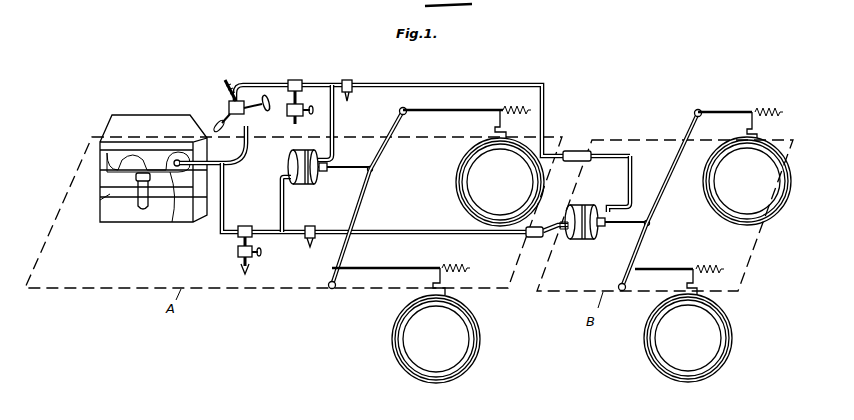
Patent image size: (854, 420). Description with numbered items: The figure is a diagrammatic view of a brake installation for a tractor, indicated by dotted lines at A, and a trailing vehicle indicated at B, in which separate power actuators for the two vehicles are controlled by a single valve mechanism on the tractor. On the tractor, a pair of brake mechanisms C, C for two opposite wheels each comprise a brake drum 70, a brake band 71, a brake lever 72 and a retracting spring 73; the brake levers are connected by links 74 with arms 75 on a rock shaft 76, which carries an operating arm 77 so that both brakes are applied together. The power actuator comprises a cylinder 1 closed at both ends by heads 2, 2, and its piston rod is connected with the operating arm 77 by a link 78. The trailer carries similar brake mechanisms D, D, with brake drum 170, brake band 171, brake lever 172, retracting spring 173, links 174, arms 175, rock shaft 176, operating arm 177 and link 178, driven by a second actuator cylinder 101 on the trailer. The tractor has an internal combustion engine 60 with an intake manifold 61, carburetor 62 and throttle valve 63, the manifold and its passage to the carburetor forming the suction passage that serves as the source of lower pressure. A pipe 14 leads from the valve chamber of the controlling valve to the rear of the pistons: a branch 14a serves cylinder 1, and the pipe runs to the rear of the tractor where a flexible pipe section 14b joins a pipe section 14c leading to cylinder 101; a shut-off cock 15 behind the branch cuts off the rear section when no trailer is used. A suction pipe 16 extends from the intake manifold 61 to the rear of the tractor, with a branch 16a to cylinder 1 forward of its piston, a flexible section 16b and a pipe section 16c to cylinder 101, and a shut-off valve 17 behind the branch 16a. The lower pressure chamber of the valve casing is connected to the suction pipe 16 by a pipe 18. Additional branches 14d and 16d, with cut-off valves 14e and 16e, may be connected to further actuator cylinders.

The cylinder 1 is at (307, 159).
The heads 2 is at (290, 155).
The pipe 14 is at (322, 83).
The branch 14a is at (336, 122).
The flexible pipe section 14b is at (577, 150).
The pipe section 14c is at (631, 180).
The additional branch 14d is at (294, 80).
The cut off valve 14e is at (285, 108).
The shut-off cock 15 is at (355, 87).
The suction pipe 16 is at (414, 231).
The branch 16a is at (283, 211).
The flexible section 16b is at (545, 242).
The pipe section 16c is at (572, 240).
The additional branch 16d is at (240, 240).
The cut off valve 16e is at (241, 272).
The shut-off valve 17 is at (316, 230).
The pipe 18 is at (246, 158).
The internal combustion engine 60 is at (161, 117).
The intake manifold 61 is at (173, 208).
The carburetor 62 is at (146, 205).
The throttle valve 63 is at (142, 195).
The brake drum 70 is at (410, 356).
The brake band 71 is at (481, 343).
The brake lever 72 is at (433, 289).
The retracting spring 73 is at (450, 267).
The links 74 is at (451, 110).
The arms 75 is at (405, 116).
The rock shaft 76 is at (360, 212).
The operating arm 77 is at (378, 172).
The link 78 is at (338, 166).
The cylinder 101 is at (592, 205).
The brake drum 170 is at (718, 192).
The brake band 171 is at (716, 213).
The brake lever 172 is at (748, 132).
The retracting spring 173 is at (776, 104).
The links 174 is at (735, 111).
The arms 175 is at (692, 115).
The rock shaft 176 is at (657, 207).
The operating arm 177 is at (650, 232).
The link 178 is at (620, 226).